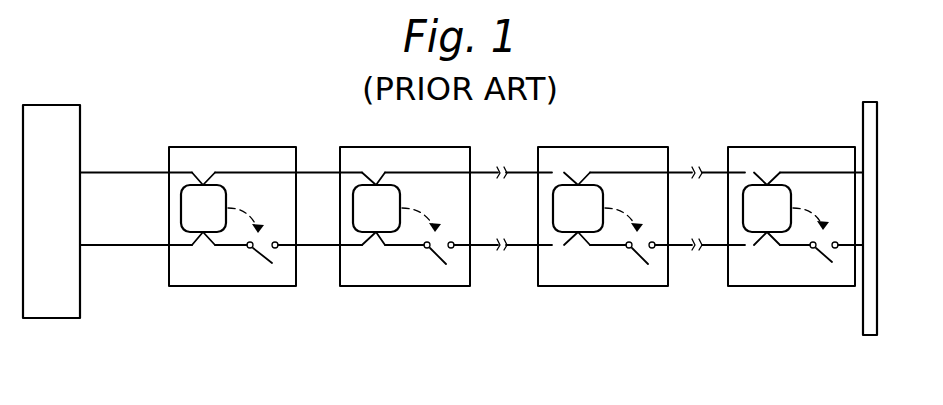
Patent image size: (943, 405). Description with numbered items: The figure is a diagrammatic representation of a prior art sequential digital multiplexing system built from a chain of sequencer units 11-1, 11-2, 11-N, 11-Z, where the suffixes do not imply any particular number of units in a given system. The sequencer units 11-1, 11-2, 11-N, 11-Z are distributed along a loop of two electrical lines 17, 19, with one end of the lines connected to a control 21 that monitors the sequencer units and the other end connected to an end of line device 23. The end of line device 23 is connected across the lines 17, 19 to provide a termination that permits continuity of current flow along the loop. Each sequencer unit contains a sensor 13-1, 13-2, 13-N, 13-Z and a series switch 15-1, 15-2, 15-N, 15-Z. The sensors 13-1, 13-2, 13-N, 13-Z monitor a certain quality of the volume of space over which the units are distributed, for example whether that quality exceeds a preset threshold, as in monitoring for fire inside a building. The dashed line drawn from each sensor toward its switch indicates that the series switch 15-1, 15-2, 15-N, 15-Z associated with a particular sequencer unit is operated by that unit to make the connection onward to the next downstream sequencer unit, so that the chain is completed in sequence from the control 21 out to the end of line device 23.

The sequencer unit 11-1 is at (197, 147).
The sequencer unit 11-2 is at (366, 147).
The sequencer unit 11-N is at (580, 147).
The sequencer unit 11-Z is at (761, 147).
The sensor 13-1 is at (181, 199).
The sensor 13-2 is at (353, 199).
The sensor 13-N is at (553, 199).
The sensor 13-Z is at (743, 199).
The series switch 15-1 is at (270, 263).
The series switch 15-2 is at (444, 264).
The series switch 15-N is at (646, 264).
The series switch 15-Z is at (828, 262).
The electrical line 17 is at (118, 172).
The electrical line 19 is at (127, 245).
The control 21 is at (74, 104).
The end of line device 23 is at (868, 337).